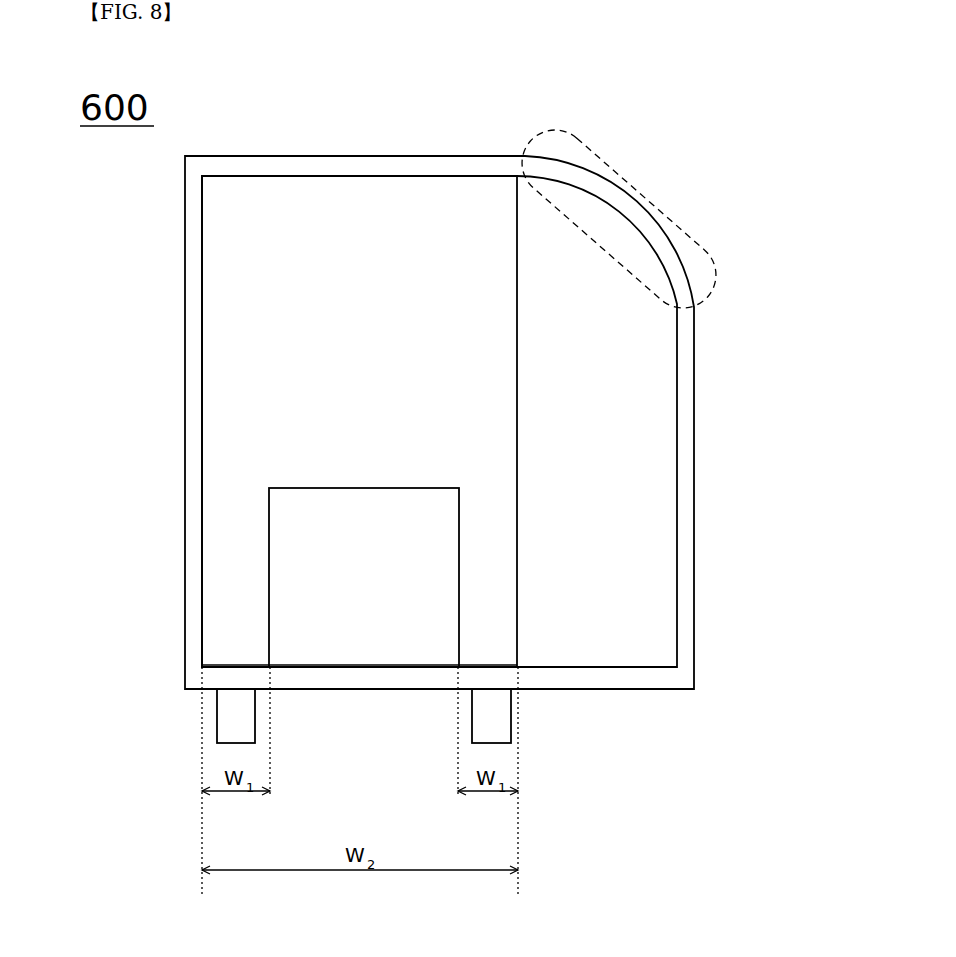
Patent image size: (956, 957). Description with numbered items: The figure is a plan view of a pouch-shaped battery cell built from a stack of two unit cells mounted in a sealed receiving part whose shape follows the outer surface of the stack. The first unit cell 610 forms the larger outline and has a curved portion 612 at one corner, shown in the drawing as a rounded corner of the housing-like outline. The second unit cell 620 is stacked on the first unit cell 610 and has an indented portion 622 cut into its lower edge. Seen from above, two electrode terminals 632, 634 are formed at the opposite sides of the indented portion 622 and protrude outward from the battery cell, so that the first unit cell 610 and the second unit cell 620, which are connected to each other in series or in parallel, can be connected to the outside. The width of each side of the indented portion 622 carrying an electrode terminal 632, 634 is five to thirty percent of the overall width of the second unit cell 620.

The first unit cell 610 is at (648, 423).
The curved portion 612 is at (665, 214).
The second unit cell 620 is at (252, 373).
The indented portion 622 is at (362, 640).
The electrode terminal 632 is at (237, 723).
The electrode terminal 634 is at (497, 733).